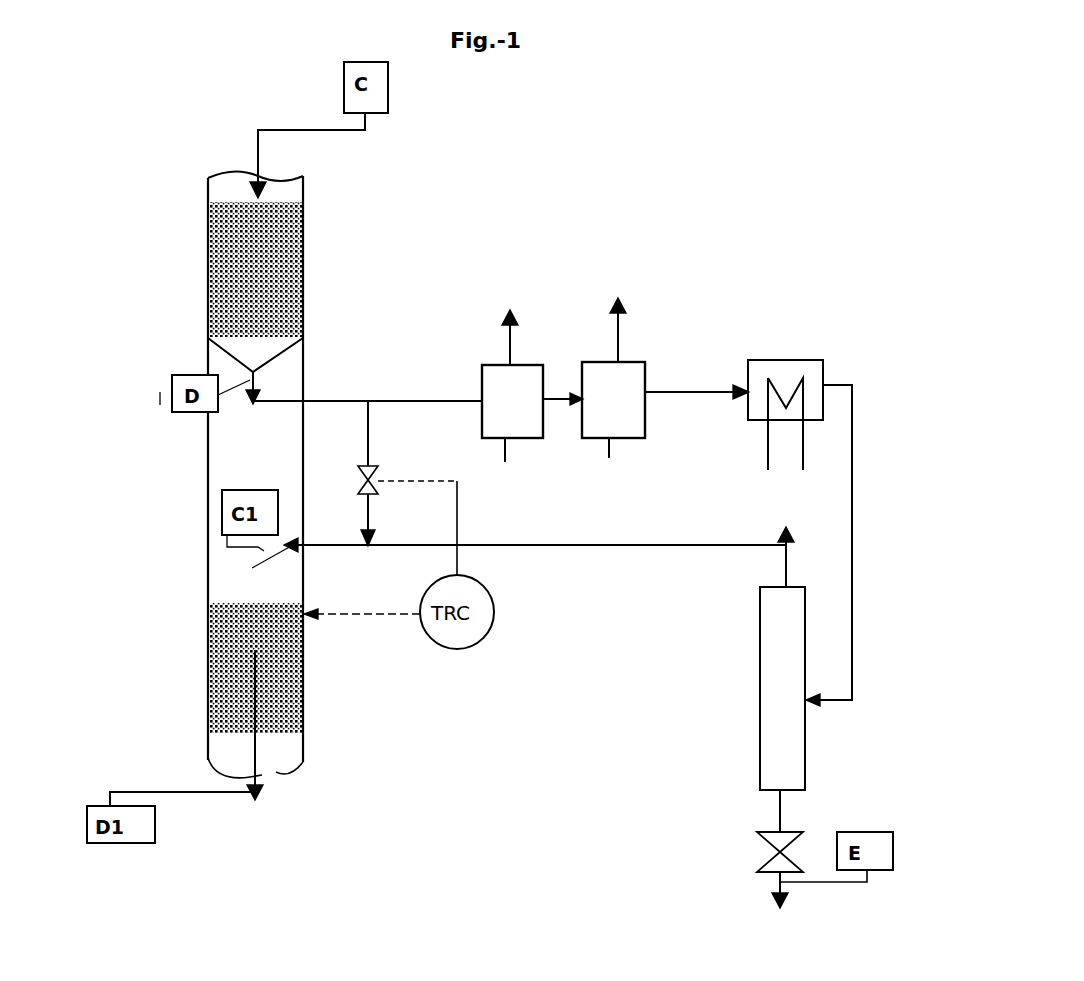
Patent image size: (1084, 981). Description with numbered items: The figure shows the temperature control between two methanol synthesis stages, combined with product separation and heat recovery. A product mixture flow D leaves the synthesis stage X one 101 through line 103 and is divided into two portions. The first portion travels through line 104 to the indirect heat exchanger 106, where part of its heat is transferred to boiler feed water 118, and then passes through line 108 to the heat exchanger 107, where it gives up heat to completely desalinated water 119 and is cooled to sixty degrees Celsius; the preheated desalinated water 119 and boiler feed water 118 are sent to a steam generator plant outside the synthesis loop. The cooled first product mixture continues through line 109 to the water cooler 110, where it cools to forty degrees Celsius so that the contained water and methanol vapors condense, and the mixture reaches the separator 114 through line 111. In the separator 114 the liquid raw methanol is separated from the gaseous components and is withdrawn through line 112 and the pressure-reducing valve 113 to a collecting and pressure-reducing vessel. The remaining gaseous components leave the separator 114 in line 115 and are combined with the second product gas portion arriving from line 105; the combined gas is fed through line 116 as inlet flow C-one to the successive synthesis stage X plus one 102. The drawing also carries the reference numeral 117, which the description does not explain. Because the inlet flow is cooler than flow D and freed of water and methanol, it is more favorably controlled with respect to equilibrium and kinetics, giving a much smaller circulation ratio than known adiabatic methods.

The synthesis stage X1 101 is at (207, 291).
The successive synthesis stage X+1 102 is at (206, 634).
The line 103 is at (307, 408).
The line 104 is at (427, 400).
The line 105 is at (363, 437).
The indirect heat exchanger 106 is at (482, 433).
The heat exchanger 107 is at (648, 414).
The line 108 is at (557, 390).
The line 109 is at (697, 384).
The water cooler 110 is at (808, 378).
The line 111 is at (855, 515).
The line 112 is at (782, 828).
The pressure-reducing valve 113 is at (770, 851).
The separator 114 is at (776, 688).
The line 115 is at (787, 562).
The line 116 is at (345, 543).
The reactor column 117 is at (205, 459).
The boiler feed water 118 is at (507, 347).
The completely desalinated water 119 is at (621, 346).